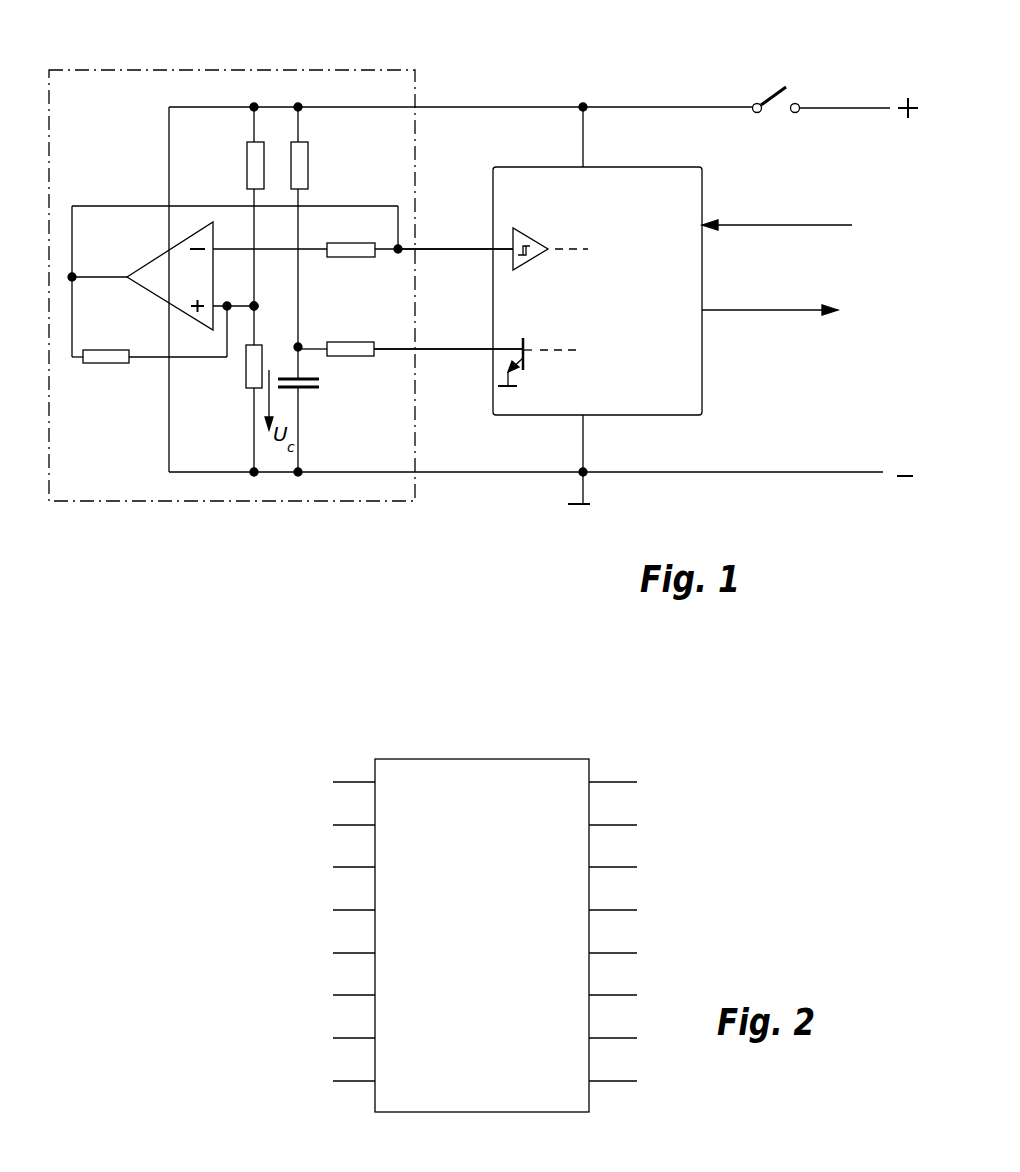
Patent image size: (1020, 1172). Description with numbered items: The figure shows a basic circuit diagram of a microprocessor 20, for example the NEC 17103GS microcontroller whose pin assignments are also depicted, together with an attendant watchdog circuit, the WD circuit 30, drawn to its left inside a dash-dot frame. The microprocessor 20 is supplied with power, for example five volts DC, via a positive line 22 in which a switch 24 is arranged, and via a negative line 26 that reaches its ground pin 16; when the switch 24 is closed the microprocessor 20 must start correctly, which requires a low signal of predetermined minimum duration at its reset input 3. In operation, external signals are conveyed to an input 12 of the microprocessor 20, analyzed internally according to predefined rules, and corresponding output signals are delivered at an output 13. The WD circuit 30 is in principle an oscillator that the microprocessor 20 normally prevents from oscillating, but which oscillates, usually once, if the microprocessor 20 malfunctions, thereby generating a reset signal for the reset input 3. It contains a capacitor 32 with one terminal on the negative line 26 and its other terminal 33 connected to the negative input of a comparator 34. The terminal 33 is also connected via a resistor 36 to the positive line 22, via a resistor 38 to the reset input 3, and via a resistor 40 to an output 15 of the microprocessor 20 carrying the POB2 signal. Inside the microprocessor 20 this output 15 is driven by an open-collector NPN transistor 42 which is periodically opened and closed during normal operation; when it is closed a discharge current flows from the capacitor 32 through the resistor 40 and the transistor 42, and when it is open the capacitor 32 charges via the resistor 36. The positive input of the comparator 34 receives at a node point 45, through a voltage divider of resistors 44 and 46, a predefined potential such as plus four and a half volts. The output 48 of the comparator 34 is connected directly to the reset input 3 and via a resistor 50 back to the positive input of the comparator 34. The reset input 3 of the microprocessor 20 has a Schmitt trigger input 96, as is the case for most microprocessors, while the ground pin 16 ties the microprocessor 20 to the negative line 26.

In FIG. 1, the reset input 3 is at (450, 252).
In FIG. 2, the reset input 3 is at (613, 1009).
In FIG. 1, the input 12 is at (765, 226).
In FIG. 2, the input 12 is at (354, 839).
In FIG. 1, the output 13 is at (760, 312).
In FIG. 2, the output 13 is at (613, 1052).
In FIG. 1, the output 15 is at (462, 352).
In FIG. 2, the output 15 is at (354, 967).
In FIG. 1, the ground pin 16 is at (583, 443).
In FIG. 2, the ground pin 16 is at (613, 1095).
In FIG. 1, the microprocessor 20 is at (690, 194).
In FIG. 2, the microprocessor 20 is at (557, 759).
In FIG. 1, the positive line 22 is at (503, 107).
In FIG. 1, the switch 24 is at (772, 90).
In FIG. 1, the negative line 26 is at (735, 476).
In FIG. 1, the WD circuit 30 is at (315, 70).
In FIG. 1, the capacitor 32 is at (312, 390).
In FIG. 1, the terminal 33 is at (298, 346).
In FIG. 1, the comparator 34 is at (156, 268).
In FIG. 1, the resistor 36 is at (308, 170).
In FIG. 1, the resistor 38 is at (355, 258).
In FIG. 1, the resistor 40 is at (358, 357).
In FIG. 1, the open-collector NPN transistor 42 is at (513, 342).
In FIG. 1, the resistor 44 is at (247, 166).
In FIG. 1, the node point 45 is at (254, 306).
In FIG. 1, the resistor 46 is at (243, 372).
In FIG. 1, the output 48 is at (99, 279).
In FIG. 1, the resistor 50 is at (113, 362).
In FIG. 1, the Schmitt trigger input 96 is at (525, 238).